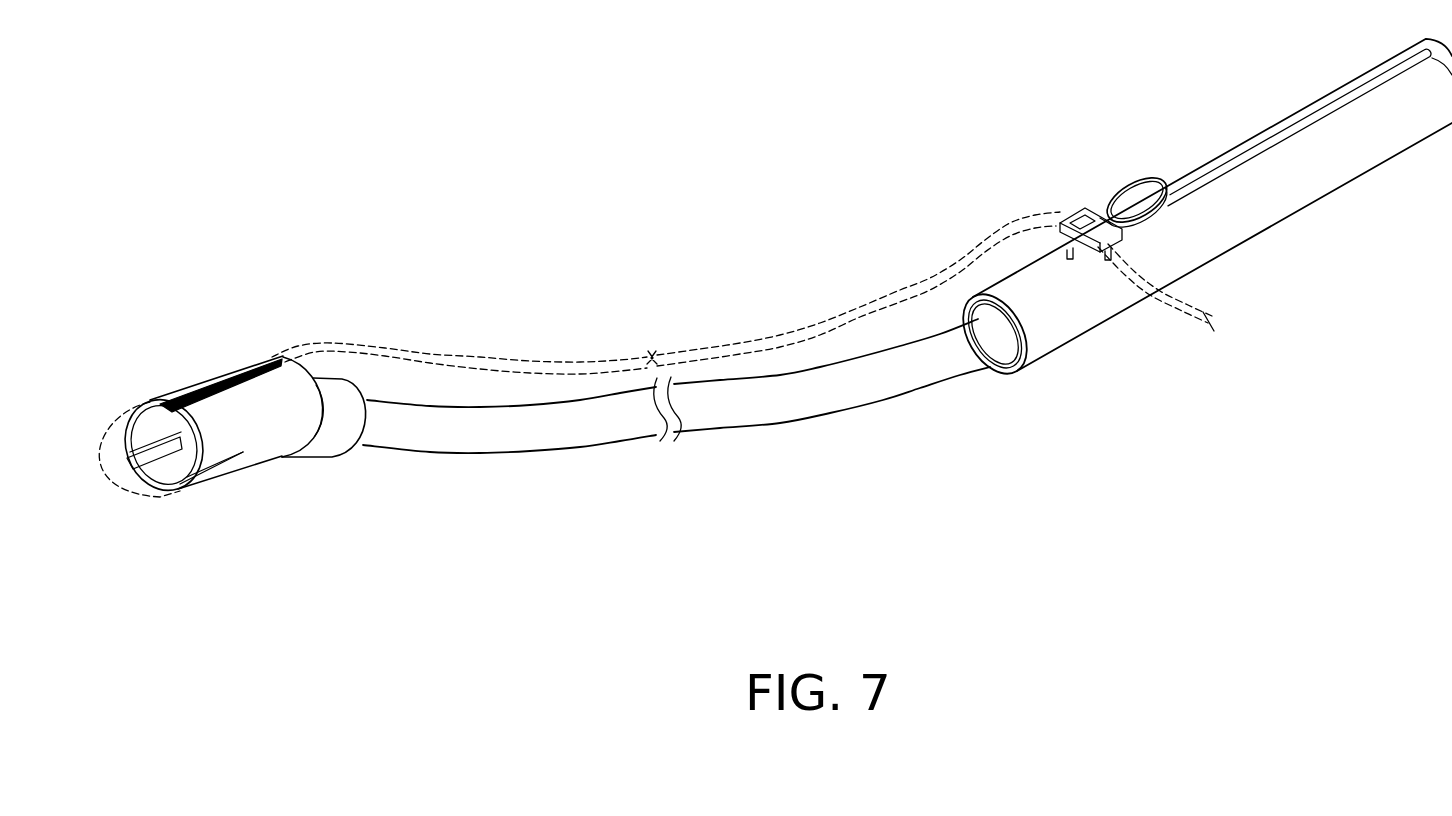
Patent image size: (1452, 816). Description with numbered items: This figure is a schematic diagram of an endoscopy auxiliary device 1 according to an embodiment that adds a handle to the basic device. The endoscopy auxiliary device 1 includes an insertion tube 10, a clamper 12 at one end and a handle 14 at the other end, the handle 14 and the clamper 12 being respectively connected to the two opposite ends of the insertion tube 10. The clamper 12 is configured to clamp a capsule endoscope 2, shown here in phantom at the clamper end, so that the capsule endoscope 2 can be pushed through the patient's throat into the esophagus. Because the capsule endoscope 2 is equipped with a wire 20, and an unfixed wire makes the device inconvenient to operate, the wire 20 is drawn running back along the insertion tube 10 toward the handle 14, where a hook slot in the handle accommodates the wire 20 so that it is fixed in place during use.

The endoscopy auxiliary device 1 is at (783, 308).
The capsule endoscope 2 is at (123, 493).
The insertion tube 10 is at (734, 412).
The clamper 12 is at (244, 474).
The handle 14 is at (1317, 212).
The wire 20 is at (597, 362).